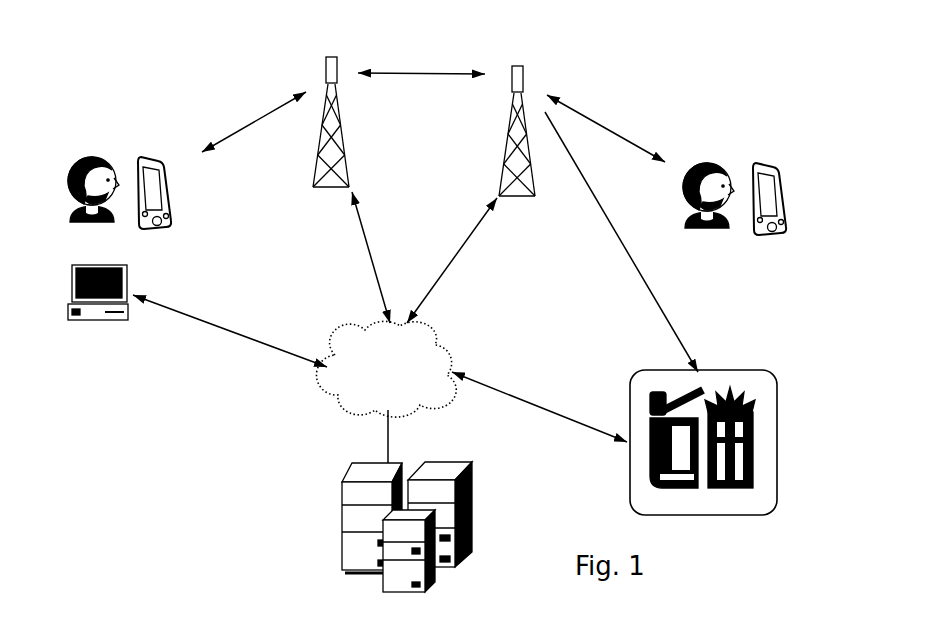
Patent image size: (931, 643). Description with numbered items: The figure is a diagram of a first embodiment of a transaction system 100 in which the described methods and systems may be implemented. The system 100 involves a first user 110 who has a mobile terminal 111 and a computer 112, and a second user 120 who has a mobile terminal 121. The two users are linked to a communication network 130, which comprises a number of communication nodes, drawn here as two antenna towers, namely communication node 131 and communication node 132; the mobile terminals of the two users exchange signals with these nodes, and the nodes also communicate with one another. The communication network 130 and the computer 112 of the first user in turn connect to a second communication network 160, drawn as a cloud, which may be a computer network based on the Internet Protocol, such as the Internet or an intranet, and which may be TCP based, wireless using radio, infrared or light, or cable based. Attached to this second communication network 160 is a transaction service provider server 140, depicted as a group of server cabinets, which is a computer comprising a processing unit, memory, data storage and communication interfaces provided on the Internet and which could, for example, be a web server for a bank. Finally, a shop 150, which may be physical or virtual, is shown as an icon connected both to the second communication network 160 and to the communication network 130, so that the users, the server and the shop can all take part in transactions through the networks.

The transaction system 100 is at (138, 420).
The first user 110 is at (92, 157).
The mobile terminal 111 is at (148, 228).
The computer 112 is at (122, 320).
The second user 120 is at (703, 162).
The mobile terminal 121 is at (765, 234).
The communication network 130 is at (300, 70).
The communication node 131 is at (338, 131).
The communication node 132 is at (507, 152).
The transaction service provider server 140 is at (343, 517).
The shop 150 is at (777, 438).
The second communication network 160 is at (437, 397).